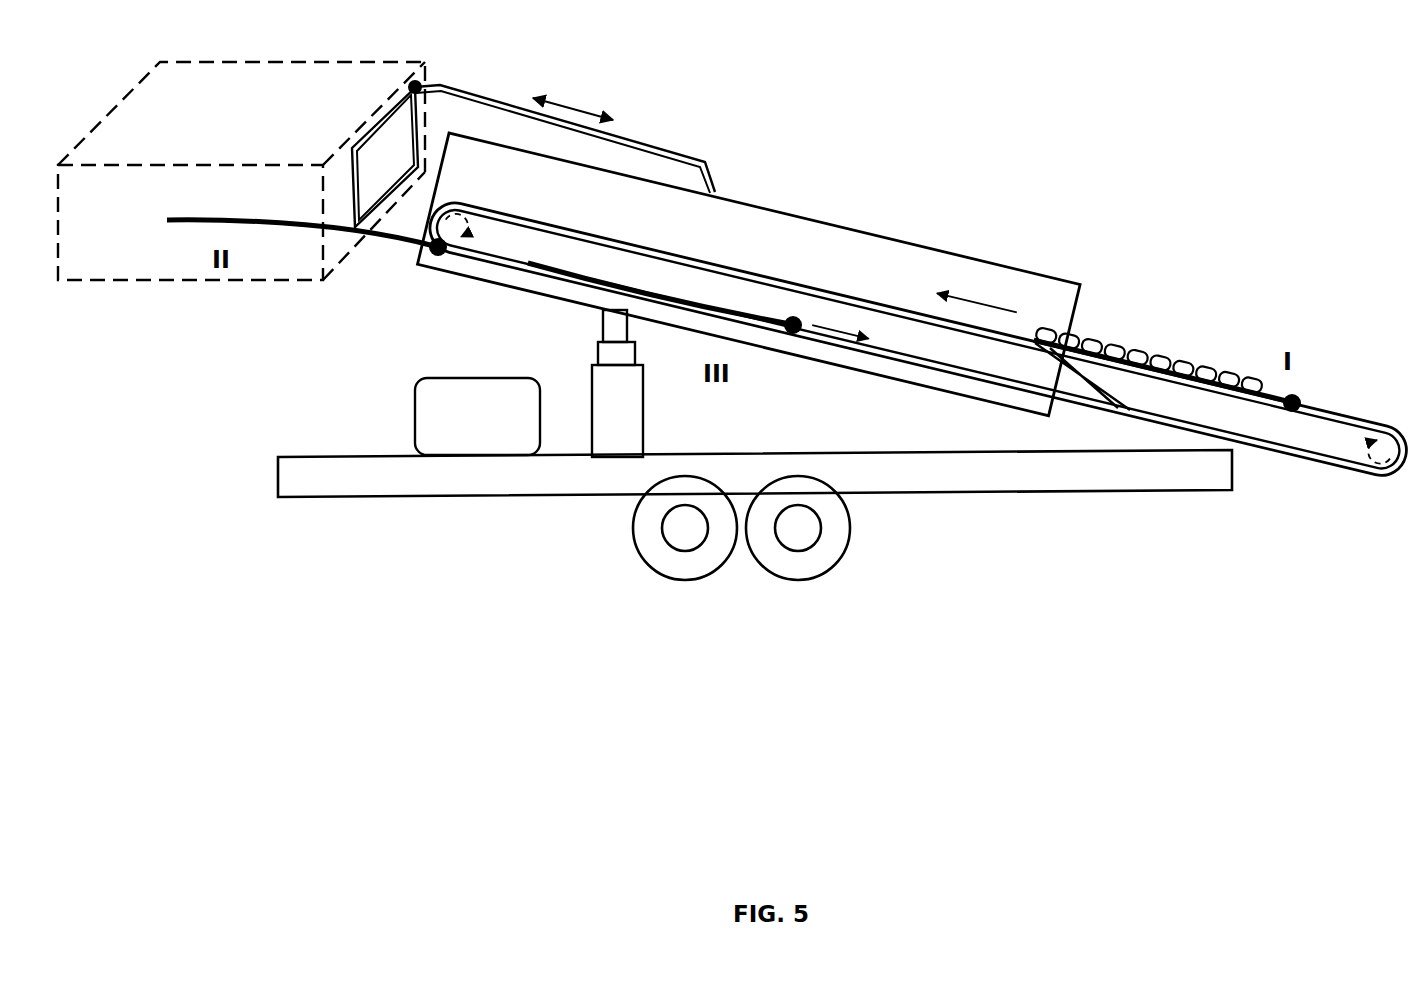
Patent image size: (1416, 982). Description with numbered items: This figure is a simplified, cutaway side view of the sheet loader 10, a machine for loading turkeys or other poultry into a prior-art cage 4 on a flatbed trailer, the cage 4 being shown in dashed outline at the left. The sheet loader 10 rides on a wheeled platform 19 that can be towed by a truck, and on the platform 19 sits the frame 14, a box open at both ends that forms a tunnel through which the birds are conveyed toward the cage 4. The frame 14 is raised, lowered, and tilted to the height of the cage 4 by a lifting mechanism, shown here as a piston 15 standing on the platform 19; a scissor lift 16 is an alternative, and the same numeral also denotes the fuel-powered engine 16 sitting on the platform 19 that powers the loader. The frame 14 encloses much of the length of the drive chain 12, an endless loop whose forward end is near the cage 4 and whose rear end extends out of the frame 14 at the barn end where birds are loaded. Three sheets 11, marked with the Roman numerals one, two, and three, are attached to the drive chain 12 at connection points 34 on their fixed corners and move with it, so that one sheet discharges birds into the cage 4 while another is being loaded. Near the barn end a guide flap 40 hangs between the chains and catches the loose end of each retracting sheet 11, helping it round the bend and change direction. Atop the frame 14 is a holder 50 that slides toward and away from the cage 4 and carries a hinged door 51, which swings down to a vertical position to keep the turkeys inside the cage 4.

The cage 4 is at (245, 60).
The sheet loader 10 is at (1034, 134).
The sheet 11 is at (393, 247).
The drive chain 12 is at (1303, 458).
The frame 14 is at (812, 211).
The piston 15 is at (645, 435).
The scissor lift 16 is at (440, 408).
The wheeled platform 19 is at (328, 482).
The connection point 34 is at (440, 256).
The guide flap 40 is at (1108, 386).
The holder 50 is at (482, 100).
The hinged door 51 is at (383, 193).